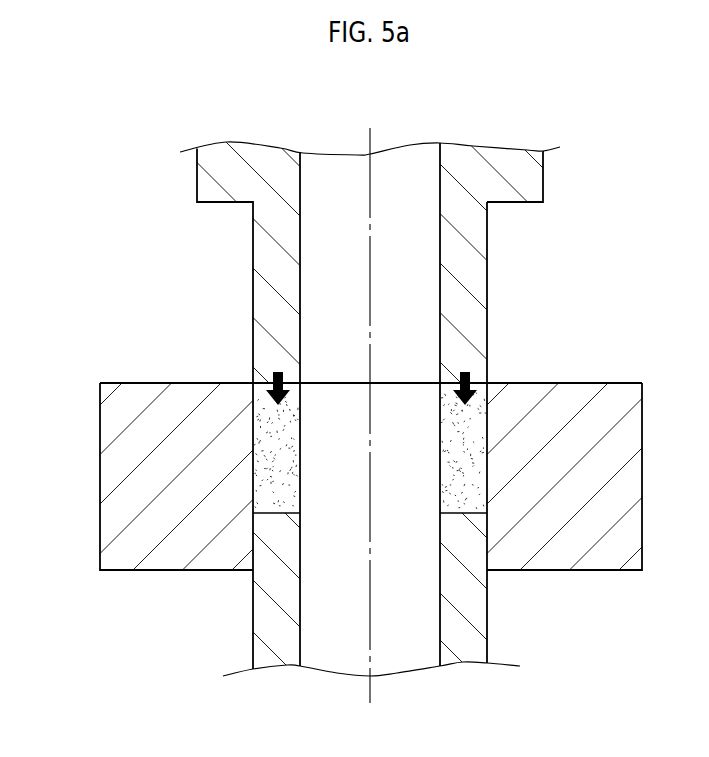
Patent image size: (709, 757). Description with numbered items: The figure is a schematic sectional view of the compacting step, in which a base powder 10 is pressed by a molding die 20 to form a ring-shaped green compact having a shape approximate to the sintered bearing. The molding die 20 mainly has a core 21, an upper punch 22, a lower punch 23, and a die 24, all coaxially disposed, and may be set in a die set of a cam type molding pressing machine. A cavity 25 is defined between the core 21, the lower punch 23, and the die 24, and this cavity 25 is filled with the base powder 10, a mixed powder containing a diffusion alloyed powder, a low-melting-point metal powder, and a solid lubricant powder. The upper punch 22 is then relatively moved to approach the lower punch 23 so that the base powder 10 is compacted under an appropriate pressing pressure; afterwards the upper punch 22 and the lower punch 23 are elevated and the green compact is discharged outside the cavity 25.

The base powder 10 is at (462, 428).
The molding die 20 is at (604, 184).
The core 21 is at (410, 646).
The upper punch 22 is at (473, 272).
The lower punch 23 is at (278, 635).
The die 24 is at (622, 483).
The cavity 25 is at (300, 472).